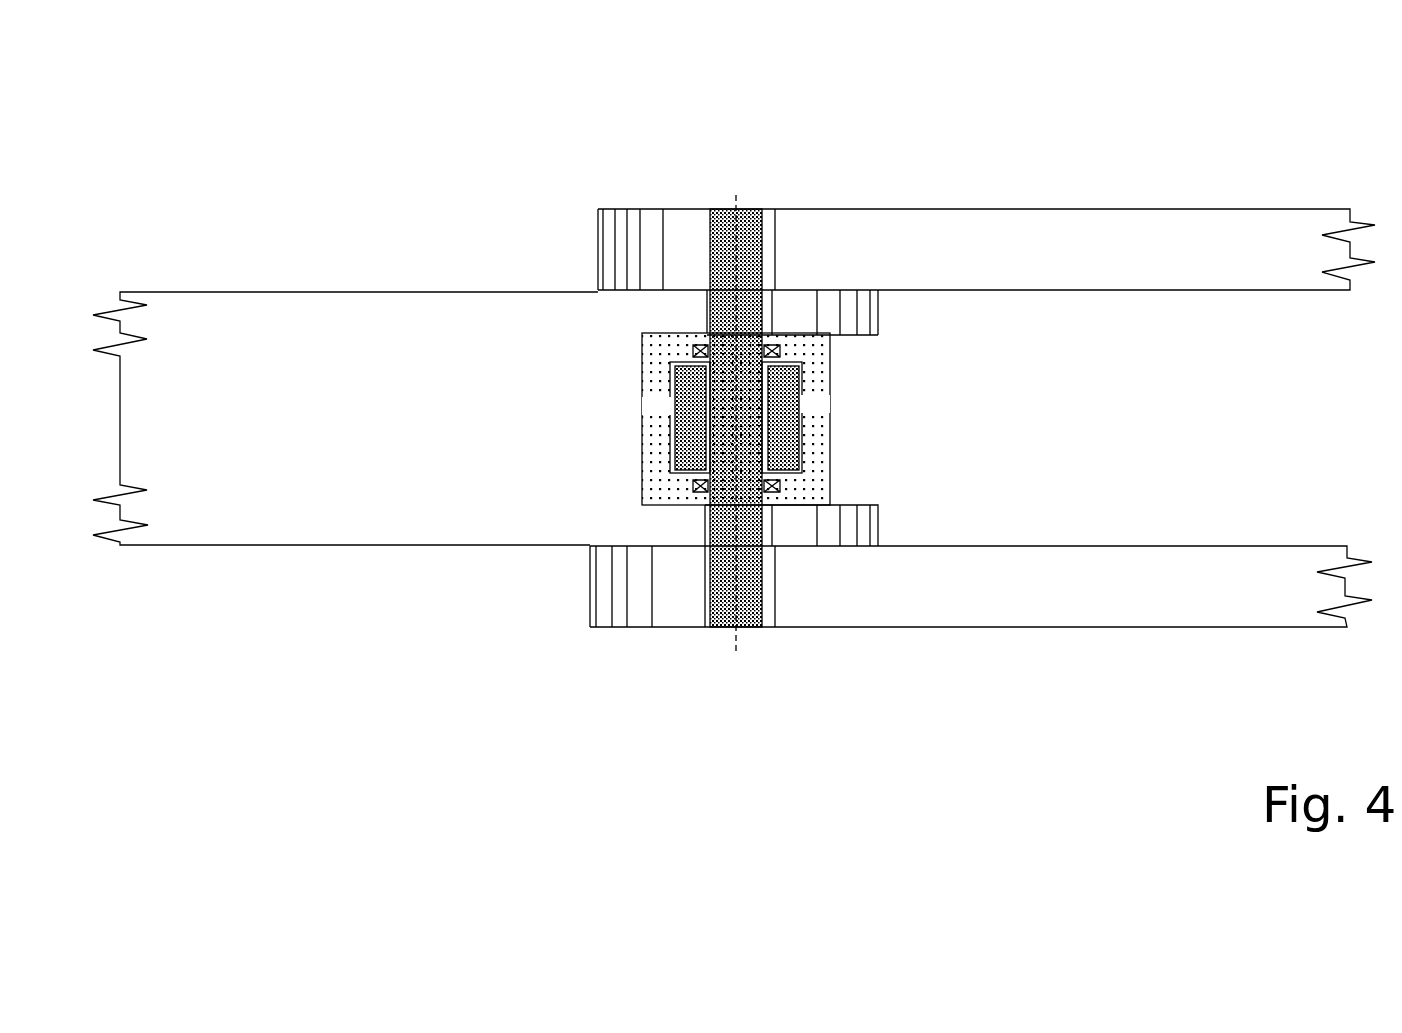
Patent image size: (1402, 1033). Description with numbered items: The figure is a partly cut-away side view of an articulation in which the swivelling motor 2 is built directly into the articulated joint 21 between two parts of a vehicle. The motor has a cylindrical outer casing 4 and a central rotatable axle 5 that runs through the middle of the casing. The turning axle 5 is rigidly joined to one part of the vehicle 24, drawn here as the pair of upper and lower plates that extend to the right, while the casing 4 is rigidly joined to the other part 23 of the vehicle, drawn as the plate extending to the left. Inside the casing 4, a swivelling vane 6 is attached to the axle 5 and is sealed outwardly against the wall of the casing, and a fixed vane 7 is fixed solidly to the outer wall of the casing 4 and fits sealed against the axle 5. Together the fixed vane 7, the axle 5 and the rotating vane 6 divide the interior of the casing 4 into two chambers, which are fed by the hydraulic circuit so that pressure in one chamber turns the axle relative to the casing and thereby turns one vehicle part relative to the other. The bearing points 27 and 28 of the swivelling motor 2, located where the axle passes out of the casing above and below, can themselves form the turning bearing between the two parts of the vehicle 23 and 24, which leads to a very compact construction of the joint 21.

The swivelling motor 2 is at (852, 418).
The outer casing 4 is at (815, 372).
The axle 5 is at (751, 225).
The swivelling vane 6 is at (697, 392).
The fixed vane 7 is at (790, 445).
The articulated joint 21 is at (650, 647).
The other part of the vehicle 23 is at (293, 498).
The part of the vehicle 24 is at (957, 247).
The bearing point 27 is at (772, 492).
The bearing point 28 is at (770, 345).